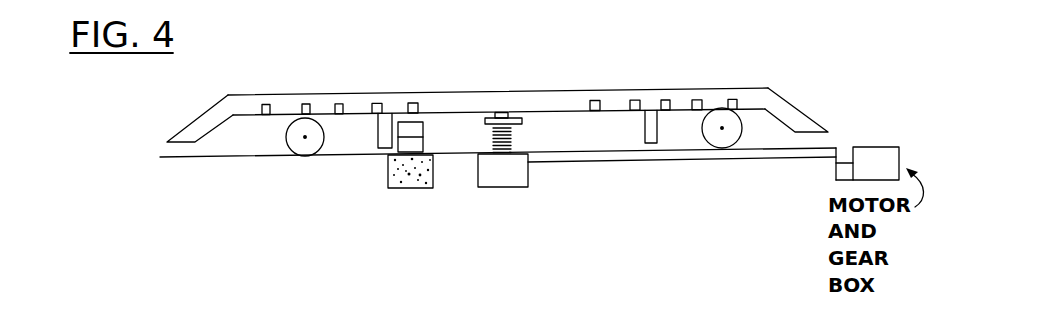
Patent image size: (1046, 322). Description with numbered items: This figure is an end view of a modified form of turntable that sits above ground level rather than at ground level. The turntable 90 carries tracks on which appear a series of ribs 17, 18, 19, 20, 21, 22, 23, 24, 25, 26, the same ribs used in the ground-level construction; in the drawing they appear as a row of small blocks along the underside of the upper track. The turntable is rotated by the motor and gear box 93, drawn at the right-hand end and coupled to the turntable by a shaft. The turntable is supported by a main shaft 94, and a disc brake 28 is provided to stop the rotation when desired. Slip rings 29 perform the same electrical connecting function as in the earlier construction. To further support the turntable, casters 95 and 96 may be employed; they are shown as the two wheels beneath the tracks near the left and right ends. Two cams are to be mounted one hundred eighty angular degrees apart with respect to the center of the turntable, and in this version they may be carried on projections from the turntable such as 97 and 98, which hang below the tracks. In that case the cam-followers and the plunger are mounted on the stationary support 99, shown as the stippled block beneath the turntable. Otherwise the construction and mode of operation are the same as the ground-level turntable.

The rib 17 is at (266, 104).
The rib 18 is at (306, 104).
The rib 19 is at (339, 104).
The rib 20 is at (377, 103).
The rib 21 is at (413, 103).
The rib 22 is at (594, 100).
The rib 23 is at (634, 100).
The rib 24 is at (665, 100).
The rib 25 is at (697, 100).
The rib 26 is at (732, 99).
The disc brake 28 is at (522, 121).
The slip rings 29 is at (486, 140).
The turntable 90 is at (562, 91).
The motor and gear box 93 is at (885, 157).
The main shaft 94 is at (502, 116).
The caster 95 is at (300, 147).
The caster 96 is at (720, 140).
The projection from the turntable 97 is at (382, 143).
The projection from the turntable 98 is at (650, 141).
The stationary support 99 is at (420, 149).